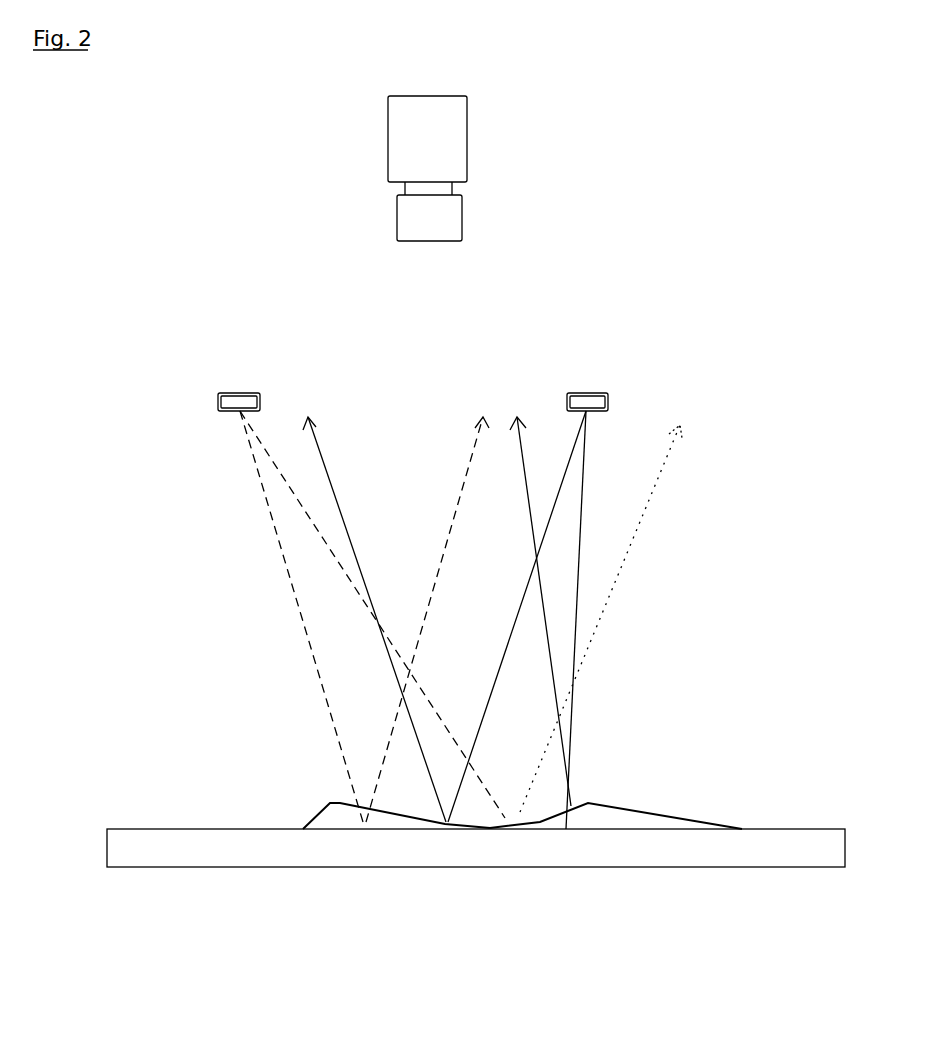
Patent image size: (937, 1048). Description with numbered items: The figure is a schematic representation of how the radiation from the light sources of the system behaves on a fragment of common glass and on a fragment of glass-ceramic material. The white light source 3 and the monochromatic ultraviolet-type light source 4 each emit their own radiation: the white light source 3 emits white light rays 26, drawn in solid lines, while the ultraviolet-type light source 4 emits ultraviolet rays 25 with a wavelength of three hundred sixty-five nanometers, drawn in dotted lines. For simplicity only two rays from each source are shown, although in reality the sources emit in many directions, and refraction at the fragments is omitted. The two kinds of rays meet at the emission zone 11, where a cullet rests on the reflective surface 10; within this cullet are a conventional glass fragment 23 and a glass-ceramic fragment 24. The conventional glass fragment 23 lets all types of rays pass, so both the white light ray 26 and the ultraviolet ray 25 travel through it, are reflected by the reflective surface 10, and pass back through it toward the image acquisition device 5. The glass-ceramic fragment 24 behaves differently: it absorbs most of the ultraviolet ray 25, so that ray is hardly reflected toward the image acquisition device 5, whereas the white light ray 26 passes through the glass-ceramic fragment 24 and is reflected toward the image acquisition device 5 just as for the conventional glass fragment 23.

The white light source 3 is at (608, 402).
The monochromatic ultraviolet-type light source 4 is at (218, 398).
The image acquisition device 5 is at (467, 143).
The reflective surface 10 is at (199, 867).
The emission zone 11 is at (581, 742).
The conventional glass fragment 23 is at (305, 817).
The glass-ceramic fragment 24 is at (572, 808).
The ultraviolet rays 25 is at (263, 493).
The white light rays 26 is at (582, 538).